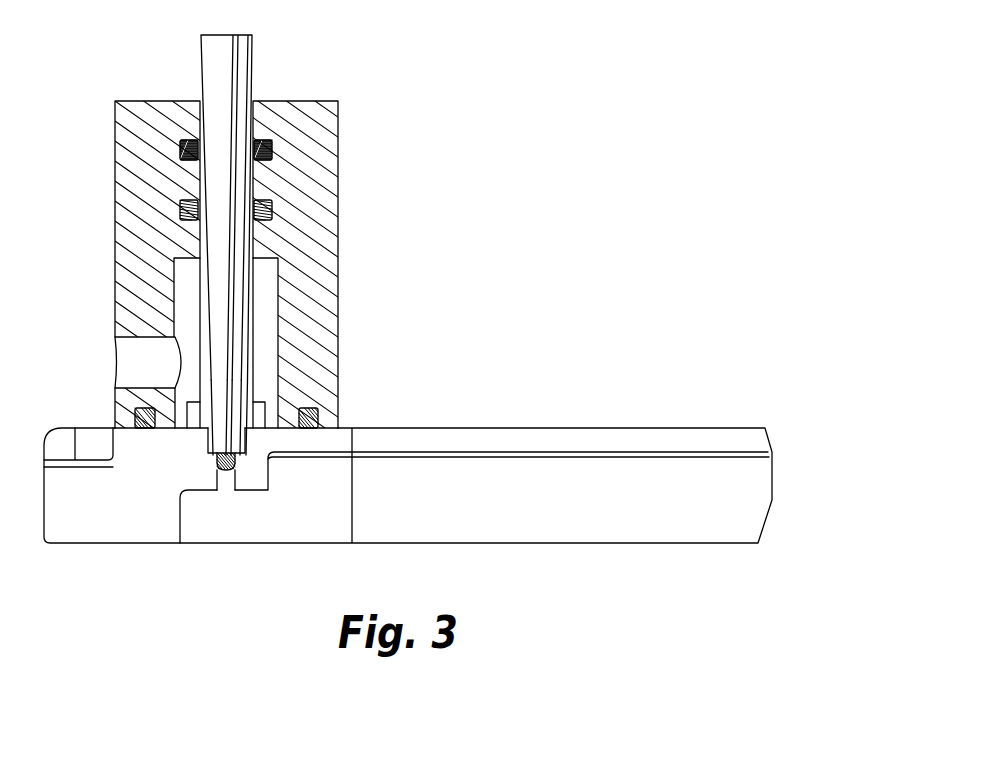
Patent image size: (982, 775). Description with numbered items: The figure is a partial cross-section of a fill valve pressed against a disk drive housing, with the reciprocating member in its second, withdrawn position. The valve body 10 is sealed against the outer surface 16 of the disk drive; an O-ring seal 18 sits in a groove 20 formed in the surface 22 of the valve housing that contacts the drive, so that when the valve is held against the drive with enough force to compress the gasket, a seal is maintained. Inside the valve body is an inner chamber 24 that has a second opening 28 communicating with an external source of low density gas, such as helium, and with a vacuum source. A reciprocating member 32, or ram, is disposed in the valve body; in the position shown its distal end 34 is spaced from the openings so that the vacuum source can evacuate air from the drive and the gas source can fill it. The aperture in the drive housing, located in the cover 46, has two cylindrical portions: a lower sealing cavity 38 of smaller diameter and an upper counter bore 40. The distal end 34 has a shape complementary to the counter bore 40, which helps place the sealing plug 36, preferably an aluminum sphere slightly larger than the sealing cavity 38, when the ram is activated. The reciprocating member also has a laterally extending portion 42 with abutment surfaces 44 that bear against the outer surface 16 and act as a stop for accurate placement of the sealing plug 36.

The valve body 10 is at (358, 107).
The outer surface 16 is at (530, 428).
The O-ring seal 18 is at (318, 417).
The groove 20 is at (299, 408).
The surface 22 is at (173, 430).
The inner chamber 24 is at (265, 385).
The second opening 28 is at (138, 369).
The reciprocating member 32 is at (220, 78).
The distal end 34 is at (225, 413).
The sealing plug 36 is at (231, 472).
The sealing cavity 38 is at (215, 480).
The counter bore 40 is at (246, 440).
The laterally extending portion 42 is at (195, 412).
The abutment surfaces 44 is at (193, 432).
The cover 46 is at (752, 440).